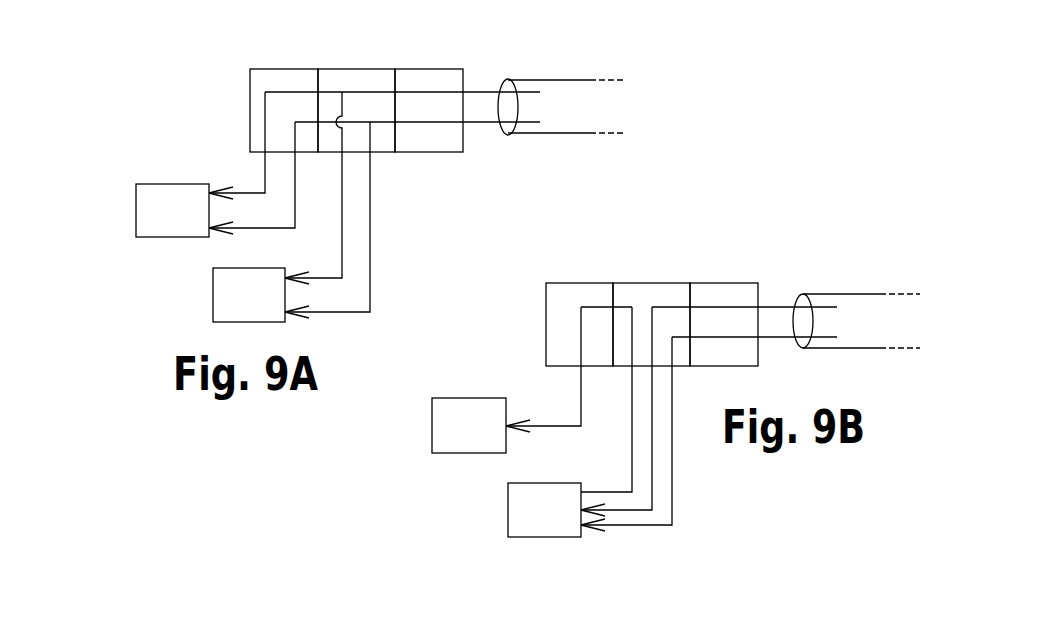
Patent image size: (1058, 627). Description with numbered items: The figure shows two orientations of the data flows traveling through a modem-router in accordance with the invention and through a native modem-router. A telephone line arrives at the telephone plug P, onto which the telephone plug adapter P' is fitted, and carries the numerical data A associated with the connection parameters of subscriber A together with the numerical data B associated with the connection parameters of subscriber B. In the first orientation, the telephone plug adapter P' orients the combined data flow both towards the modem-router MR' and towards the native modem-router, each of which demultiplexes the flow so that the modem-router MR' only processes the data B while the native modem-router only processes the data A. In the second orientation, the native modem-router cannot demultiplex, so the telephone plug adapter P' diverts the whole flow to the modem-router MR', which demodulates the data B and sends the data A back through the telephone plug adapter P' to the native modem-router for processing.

In FIG. 9A, the telephone plug P is at (284, 76).
In FIG. 9B, the telephone plug P is at (579, 289).
In FIG. 9A, the telephone plug adapter P' is at (356, 76).
In FIG. 9B, the telephone plug adapter P' is at (651, 285).
In FIG. 9A, the numerical data A is at (415, 91).
In FIG. 9B, the numerical data A is at (704, 357).
In FIG. 9A, the numerical data B is at (430, 122).
In FIG. 9B, the numerical data B is at (766, 337).
In FIG. 9A, the modem-router MR' is at (209, 295).
In FIG. 9B, the modem-router MR' is at (504, 510).